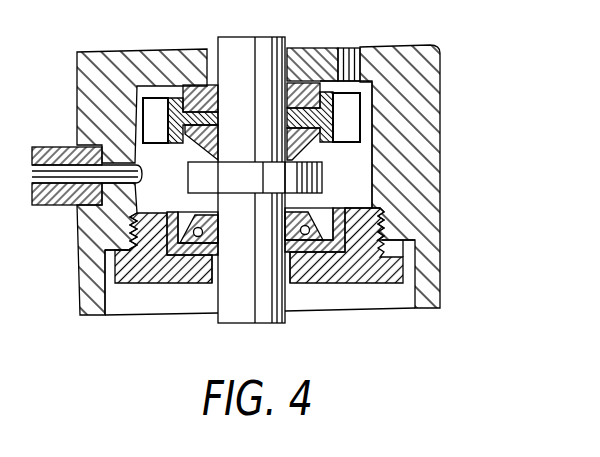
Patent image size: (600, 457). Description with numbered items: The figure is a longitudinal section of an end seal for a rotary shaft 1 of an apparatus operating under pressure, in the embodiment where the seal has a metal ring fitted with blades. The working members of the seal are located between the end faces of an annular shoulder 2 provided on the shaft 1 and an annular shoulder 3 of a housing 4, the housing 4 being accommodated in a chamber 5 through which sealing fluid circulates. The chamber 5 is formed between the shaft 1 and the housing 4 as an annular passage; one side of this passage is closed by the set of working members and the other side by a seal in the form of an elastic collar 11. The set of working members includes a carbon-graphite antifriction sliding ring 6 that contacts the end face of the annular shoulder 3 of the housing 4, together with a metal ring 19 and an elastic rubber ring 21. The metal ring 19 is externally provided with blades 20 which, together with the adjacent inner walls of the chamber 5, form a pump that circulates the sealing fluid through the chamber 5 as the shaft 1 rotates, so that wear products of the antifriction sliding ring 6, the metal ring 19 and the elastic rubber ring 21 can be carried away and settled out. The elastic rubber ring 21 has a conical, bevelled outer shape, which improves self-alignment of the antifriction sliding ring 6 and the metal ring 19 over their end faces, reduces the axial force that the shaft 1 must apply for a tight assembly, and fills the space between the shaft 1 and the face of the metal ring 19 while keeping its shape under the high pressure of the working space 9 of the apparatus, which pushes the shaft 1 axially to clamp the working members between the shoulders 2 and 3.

The rotary shaft 1 is at (220, 304).
The annular shoulder 2 is at (192, 183).
The annular shoulder 3 is at (308, 53).
The housing 4 is at (441, 138).
The chamber 5 is at (367, 170).
The antifriction sliding ring 6 is at (218, 93).
The working space 9 is at (385, 302).
The elastic collar 11 is at (328, 265).
The metal ring 19 is at (297, 114).
The blades 20 is at (347, 135).
The elastic rubber ring 21 is at (197, 145).